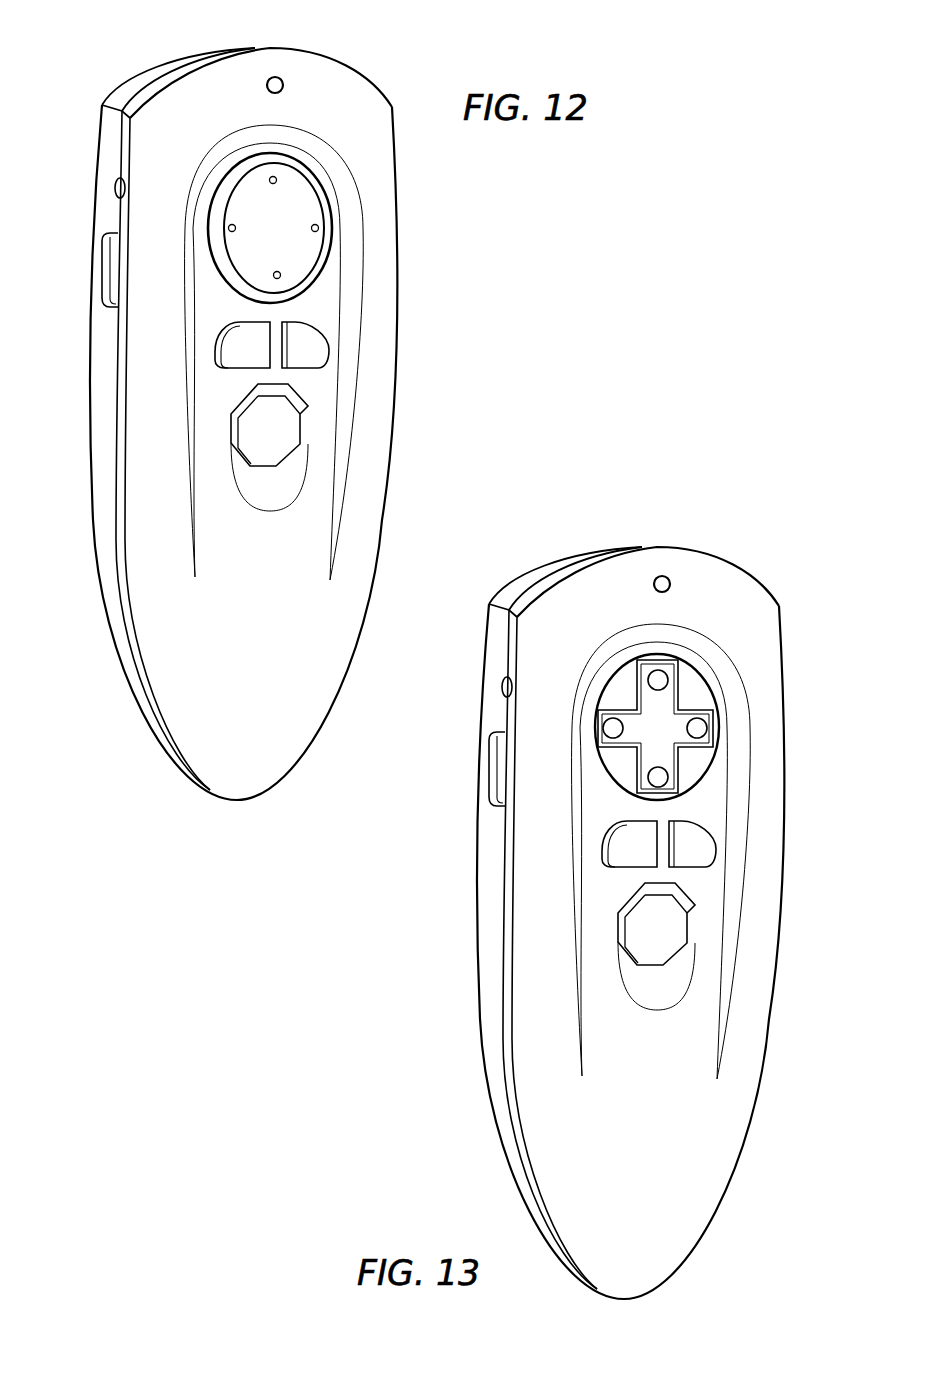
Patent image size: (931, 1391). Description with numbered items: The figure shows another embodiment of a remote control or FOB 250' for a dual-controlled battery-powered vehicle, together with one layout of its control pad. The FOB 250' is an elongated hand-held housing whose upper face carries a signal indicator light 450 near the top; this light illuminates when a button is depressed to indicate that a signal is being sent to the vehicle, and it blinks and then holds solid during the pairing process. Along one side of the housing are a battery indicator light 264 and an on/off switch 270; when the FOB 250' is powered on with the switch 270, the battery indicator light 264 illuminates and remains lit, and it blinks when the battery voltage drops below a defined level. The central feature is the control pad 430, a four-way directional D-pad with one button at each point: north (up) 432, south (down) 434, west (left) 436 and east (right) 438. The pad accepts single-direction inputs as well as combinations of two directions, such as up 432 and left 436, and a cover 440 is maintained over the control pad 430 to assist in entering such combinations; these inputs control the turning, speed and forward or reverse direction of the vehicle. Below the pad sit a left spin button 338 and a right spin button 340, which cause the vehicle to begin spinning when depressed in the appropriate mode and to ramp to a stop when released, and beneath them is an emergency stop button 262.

In FIG. 12, the FOB 250' is at (278, 422).
In FIG. 13, the FOB 250' is at (664, 921).
In FIG. 12, the signal indicator light 450 is at (281, 78).
In FIG. 13, the signal indicator light 450 is at (719, 550).
In FIG. 12, the battery indicator light 264 is at (113, 187).
In FIG. 13, the battery indicator light 264 is at (473, 647).
In FIG. 12, the on/off switch 270 is at (103, 279).
In FIG. 13, the on/off switch 270 is at (470, 801).
In FIG. 12, the control pad 430 is at (332, 242).
In FIG. 12, the cover 440 is at (318, 265).
In FIG. 12, the left spin button 338 is at (236, 351).
In FIG. 13, the left spin button 338 is at (546, 882).
In FIG. 12, the right spin button 340 is at (313, 345).
In FIG. 13, the right spin button 340 is at (765, 852).
In FIG. 12, the emergency stop button 262 is at (280, 429).
In FIG. 13, the emergency stop button 262 is at (727, 946).
In FIG. 13, the north (up) button 432 is at (741, 646).
In FIG. 13, the south (down) button 434 is at (739, 783).
In FIG. 13, the west (left) button 436 is at (518, 720).
In FIG. 13, the east (right) button 438 is at (766, 715).